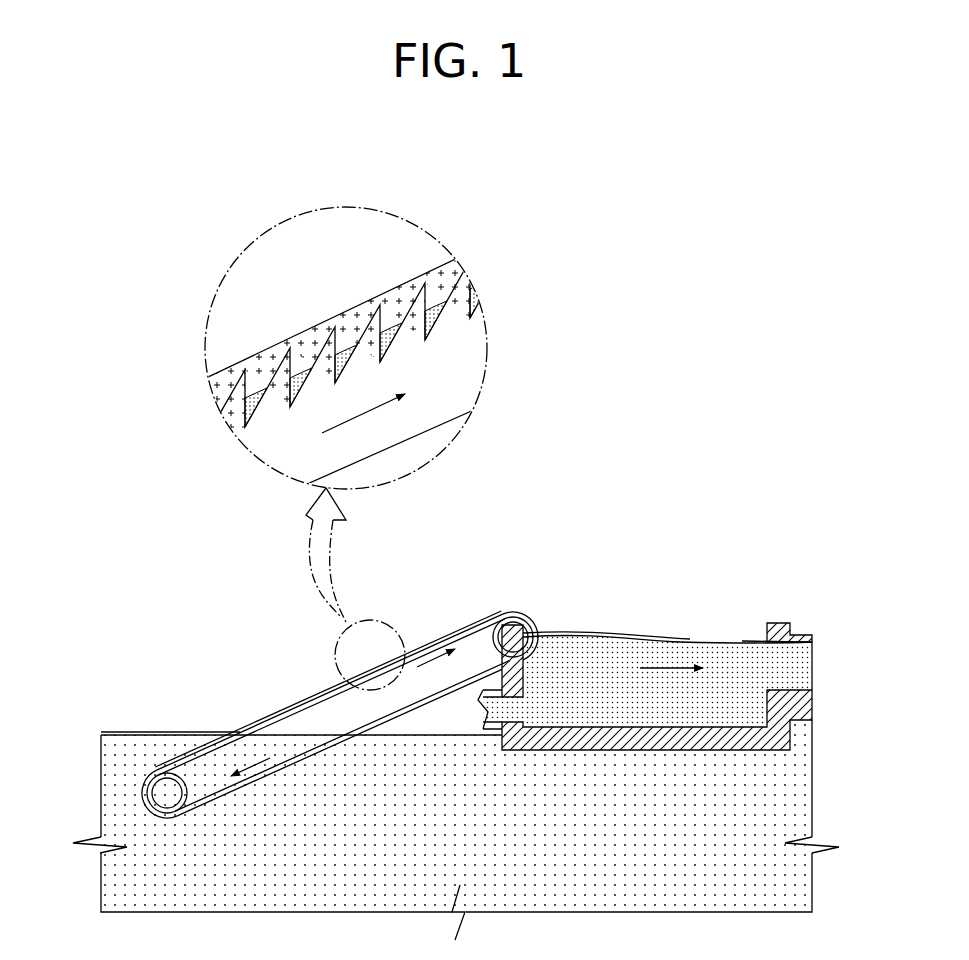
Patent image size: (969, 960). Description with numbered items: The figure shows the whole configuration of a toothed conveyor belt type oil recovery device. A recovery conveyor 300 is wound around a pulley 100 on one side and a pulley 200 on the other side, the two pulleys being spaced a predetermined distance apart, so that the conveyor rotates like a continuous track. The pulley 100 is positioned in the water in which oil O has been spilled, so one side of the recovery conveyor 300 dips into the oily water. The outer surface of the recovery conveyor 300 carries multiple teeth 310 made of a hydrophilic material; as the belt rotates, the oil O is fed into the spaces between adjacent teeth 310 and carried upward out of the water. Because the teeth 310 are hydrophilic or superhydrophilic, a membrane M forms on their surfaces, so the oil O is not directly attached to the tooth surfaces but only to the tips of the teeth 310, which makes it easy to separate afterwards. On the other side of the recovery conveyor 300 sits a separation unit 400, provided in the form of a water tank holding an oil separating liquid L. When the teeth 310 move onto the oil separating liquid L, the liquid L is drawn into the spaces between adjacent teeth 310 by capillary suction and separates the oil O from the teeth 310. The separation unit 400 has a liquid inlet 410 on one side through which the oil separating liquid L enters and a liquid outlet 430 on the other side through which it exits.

The pulley 100 is at (152, 797).
The pulley 200 is at (492, 638).
The recovery conveyor 300 is at (327, 690).
The teeth 310 is at (390, 330).
The separation unit 400 is at (780, 737).
The liquid inlet 410 is at (523, 703).
The liquid outlet 430 is at (792, 667).
The oil O is at (317, 340).
The membrane M is at (278, 387).
The oil separating liquid L is at (742, 643).